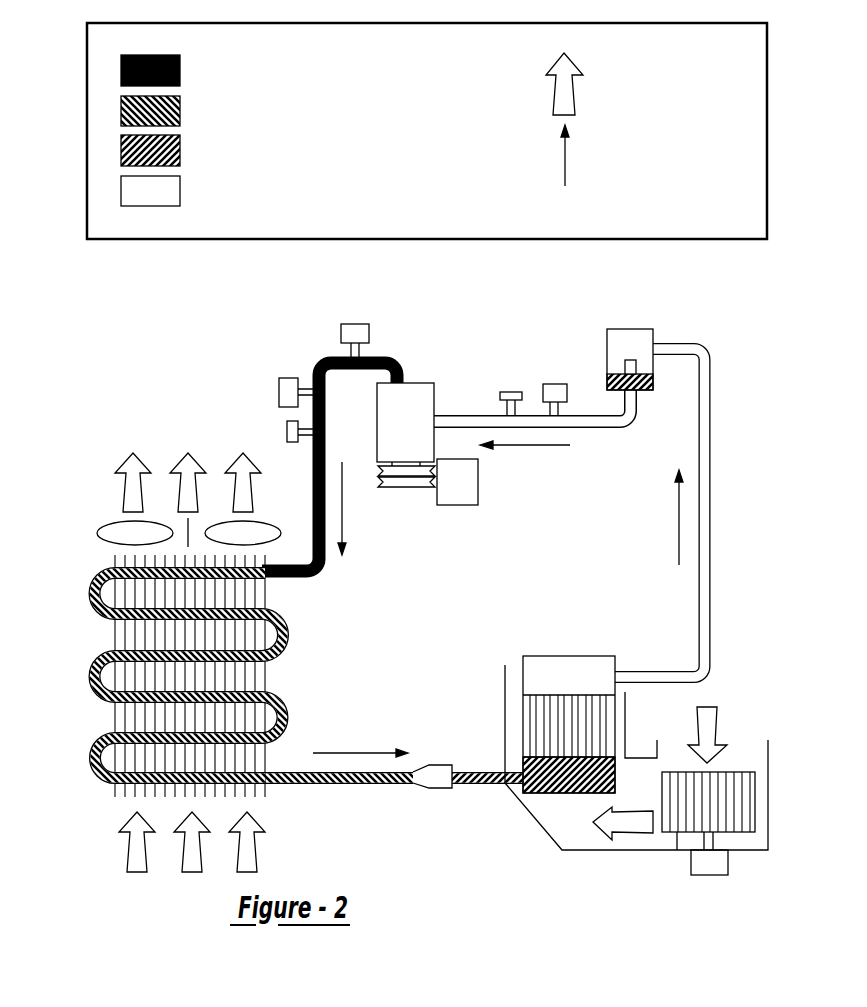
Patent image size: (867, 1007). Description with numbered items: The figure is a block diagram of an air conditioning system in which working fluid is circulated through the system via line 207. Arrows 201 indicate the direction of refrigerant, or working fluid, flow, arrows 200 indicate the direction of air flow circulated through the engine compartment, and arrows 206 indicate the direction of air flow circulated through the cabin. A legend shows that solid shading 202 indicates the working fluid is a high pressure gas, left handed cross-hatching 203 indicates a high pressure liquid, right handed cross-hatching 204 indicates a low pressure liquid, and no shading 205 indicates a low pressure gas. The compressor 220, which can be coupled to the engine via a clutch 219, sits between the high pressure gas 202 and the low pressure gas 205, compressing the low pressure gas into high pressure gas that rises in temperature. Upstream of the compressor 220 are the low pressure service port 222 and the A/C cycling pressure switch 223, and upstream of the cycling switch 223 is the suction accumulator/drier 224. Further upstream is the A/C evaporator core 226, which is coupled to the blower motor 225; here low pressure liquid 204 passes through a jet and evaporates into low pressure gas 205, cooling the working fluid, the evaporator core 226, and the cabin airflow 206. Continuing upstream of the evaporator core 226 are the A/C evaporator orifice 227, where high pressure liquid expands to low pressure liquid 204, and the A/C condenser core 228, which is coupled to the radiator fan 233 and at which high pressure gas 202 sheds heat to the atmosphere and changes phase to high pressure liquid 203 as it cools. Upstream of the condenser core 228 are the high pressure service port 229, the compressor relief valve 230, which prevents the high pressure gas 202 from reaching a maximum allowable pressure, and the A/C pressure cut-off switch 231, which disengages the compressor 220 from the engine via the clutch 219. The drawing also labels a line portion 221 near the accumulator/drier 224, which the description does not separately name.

The air flow arrows 200 is at (551, 96).
The refrigerant flow arrows 201 is at (565, 165).
The high pressure gas 202 is at (121, 71).
The high pressure liquid 203 is at (121, 109).
The low pressure liquid 204 is at (121, 149).
The low pressure gas 205 is at (121, 189).
The cabin air flow arrows 206 is at (717, 727).
The line 207 is at (457, 415).
The clutch 219 is at (455, 507).
The compressor 220 is at (417, 383).
The suction line 221 is at (596, 428).
The low pressure service port 222 is at (514, 392).
The A/C cycling pressure switch 223 is at (554, 384).
The suction accumulator/drier 224 is at (630, 329).
The blower motor 225 is at (675, 850).
The A/C evaporator core 226 is at (545, 793).
The A/C evaporator orifice 227 is at (430, 790).
The A/C condenser core 228 is at (290, 718).
The high pressure service port 229 is at (287, 431).
The compressor relief valve 230 is at (279, 390).
The A/C pressure cut-off switch 231 is at (355, 324).
The radiator fan 233 is at (97, 533).